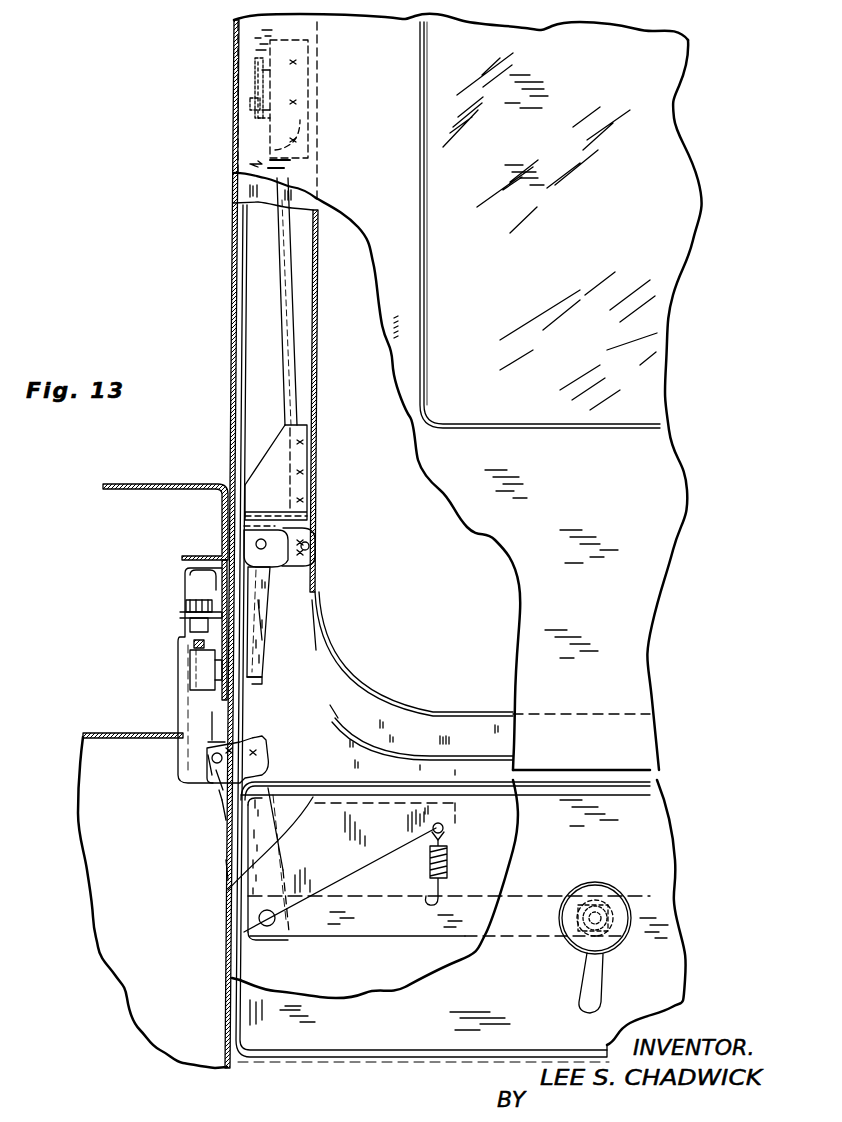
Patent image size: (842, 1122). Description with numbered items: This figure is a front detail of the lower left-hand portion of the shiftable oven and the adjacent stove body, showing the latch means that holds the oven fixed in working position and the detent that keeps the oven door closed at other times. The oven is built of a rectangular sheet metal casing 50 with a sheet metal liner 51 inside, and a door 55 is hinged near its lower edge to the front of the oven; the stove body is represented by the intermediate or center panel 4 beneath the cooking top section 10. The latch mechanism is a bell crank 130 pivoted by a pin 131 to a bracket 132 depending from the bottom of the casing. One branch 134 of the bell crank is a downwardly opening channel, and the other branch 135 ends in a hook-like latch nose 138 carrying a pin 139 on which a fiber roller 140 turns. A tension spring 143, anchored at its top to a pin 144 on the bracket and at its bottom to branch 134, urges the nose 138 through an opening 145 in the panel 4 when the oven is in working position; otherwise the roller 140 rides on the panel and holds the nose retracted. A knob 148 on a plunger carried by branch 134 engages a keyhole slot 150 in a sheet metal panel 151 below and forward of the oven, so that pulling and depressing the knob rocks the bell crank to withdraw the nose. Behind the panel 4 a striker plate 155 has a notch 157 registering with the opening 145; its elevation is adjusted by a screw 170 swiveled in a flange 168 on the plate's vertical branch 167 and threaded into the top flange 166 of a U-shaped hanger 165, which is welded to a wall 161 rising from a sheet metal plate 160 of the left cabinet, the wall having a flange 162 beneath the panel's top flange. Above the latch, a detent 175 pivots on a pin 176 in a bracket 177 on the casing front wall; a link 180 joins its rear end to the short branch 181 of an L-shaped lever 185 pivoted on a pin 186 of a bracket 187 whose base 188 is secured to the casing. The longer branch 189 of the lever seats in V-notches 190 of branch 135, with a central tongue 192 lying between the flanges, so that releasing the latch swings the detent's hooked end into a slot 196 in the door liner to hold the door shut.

The intermediate or center panel 4 is at (226, 872).
The top section 10 is at (130, 484).
The casing 50 is at (233, 345).
The liner 51 is at (404, 714).
The door 55 is at (640, 648).
The bell crank 130 is at (344, 937).
The pin 131 is at (240, 935).
The bracket 132 is at (372, 868).
The branch 134 is at (447, 937).
The branch 135 is at (240, 890).
The latch nose 138 is at (210, 766).
The pin 139 is at (212, 787).
The roller 140 is at (212, 773).
The tension spring 143 is at (450, 866).
The pin 144 is at (445, 828).
The opening 145 is at (218, 735).
The knob 148 is at (625, 915).
The keyhole slot 150 is at (600, 978).
The sheet metal panel 151 is at (285, 1040).
The striker plate 155 is at (222, 807).
The notch 157 is at (220, 745).
The sheet metal plate 160 is at (100, 737).
The wall 161 is at (195, 683).
The flange 162 is at (190, 580).
The hanger 165 is at (180, 758).
The top flange 166 is at (296, 650).
The vertical branch 167 is at (258, 680).
The flange 168 is at (195, 618).
The adjusting screw 170 is at (195, 602).
The detent 175 is at (268, 82).
The pin 176 is at (275, 149).
The bracket 177 is at (300, 86).
The link 180 is at (283, 290).
The short branch 181 is at (308, 546).
The L-shaped lever 185 is at (266, 592).
The pin 186 is at (258, 540).
The bracket 187 is at (262, 523).
The base 188 is at (280, 489).
The longer branch 189 is at (262, 628).
The V-notches 190 is at (274, 742).
The central tongue 192 is at (270, 762).
The slot 196 is at (262, 63).